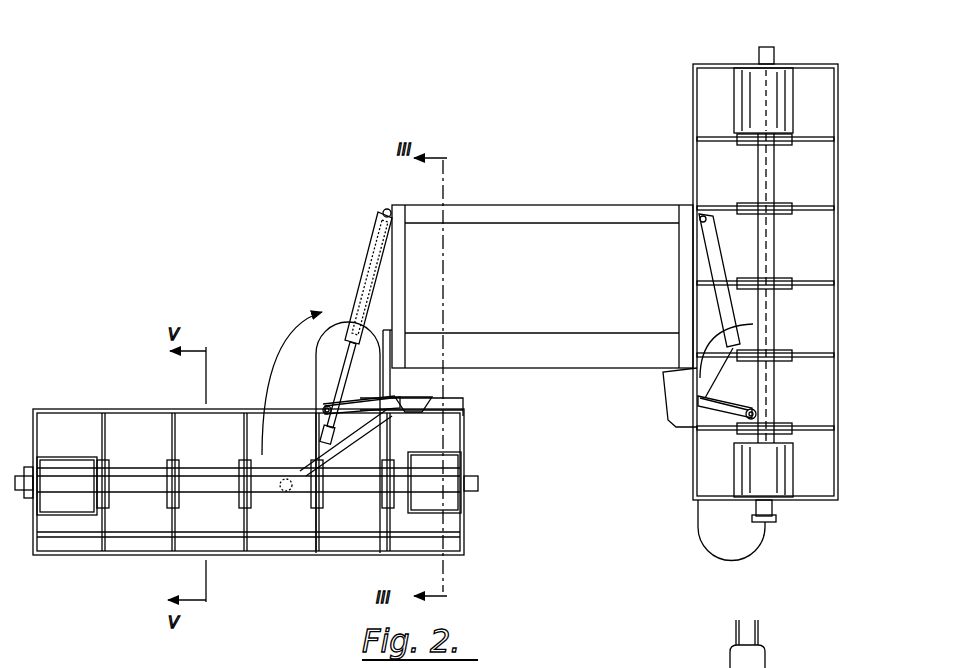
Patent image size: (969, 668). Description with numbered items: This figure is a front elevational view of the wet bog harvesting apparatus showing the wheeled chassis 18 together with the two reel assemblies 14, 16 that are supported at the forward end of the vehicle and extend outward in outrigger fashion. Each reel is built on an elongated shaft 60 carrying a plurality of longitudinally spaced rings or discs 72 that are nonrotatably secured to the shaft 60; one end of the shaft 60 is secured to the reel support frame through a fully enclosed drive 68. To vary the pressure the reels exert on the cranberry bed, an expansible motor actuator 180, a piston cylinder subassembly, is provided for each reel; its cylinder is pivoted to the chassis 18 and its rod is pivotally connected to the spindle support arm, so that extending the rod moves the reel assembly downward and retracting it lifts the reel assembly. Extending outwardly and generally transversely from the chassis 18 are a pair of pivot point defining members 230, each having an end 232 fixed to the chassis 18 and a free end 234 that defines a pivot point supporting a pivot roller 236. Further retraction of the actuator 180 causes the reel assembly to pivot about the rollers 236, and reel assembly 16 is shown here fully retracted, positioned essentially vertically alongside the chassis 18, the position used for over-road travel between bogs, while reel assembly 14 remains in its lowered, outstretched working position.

The reel assembly 14 is at (102, 378).
The reel assembly 16 is at (674, 163).
The chassis 18 is at (507, 366).
The shaft 60 is at (128, 482).
The fully enclosed drive 68 is at (766, 483).
The rings or discs 72 is at (708, 134).
The expansible motor actuator 180 is at (350, 290).
The pivot point defining members 230 is at (400, 393).
The end 232 is at (430, 400).
The free end 234 is at (323, 407).
The pivot roller 236 is at (326, 412).